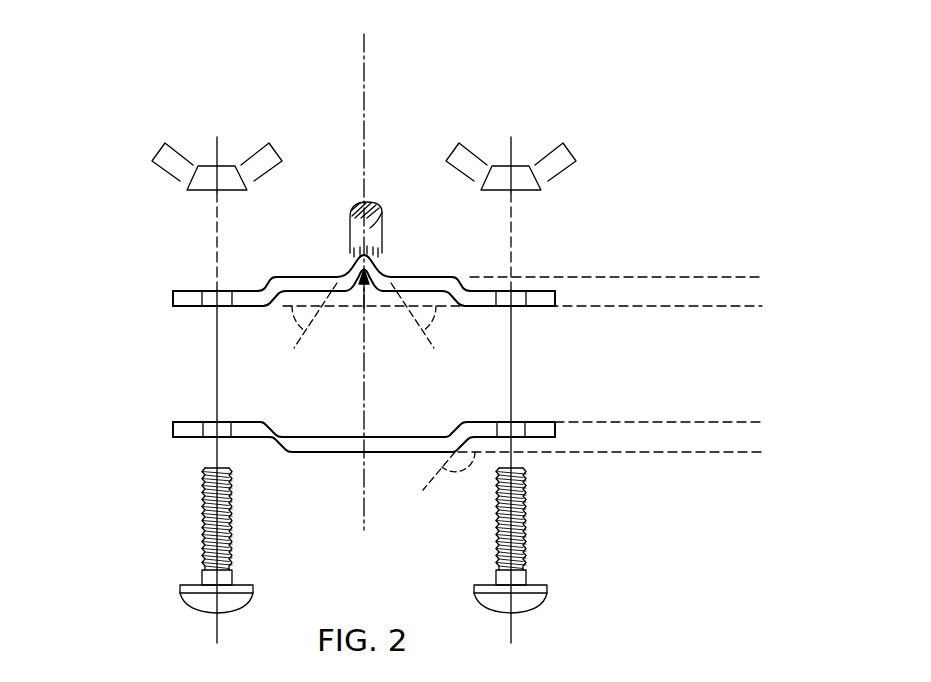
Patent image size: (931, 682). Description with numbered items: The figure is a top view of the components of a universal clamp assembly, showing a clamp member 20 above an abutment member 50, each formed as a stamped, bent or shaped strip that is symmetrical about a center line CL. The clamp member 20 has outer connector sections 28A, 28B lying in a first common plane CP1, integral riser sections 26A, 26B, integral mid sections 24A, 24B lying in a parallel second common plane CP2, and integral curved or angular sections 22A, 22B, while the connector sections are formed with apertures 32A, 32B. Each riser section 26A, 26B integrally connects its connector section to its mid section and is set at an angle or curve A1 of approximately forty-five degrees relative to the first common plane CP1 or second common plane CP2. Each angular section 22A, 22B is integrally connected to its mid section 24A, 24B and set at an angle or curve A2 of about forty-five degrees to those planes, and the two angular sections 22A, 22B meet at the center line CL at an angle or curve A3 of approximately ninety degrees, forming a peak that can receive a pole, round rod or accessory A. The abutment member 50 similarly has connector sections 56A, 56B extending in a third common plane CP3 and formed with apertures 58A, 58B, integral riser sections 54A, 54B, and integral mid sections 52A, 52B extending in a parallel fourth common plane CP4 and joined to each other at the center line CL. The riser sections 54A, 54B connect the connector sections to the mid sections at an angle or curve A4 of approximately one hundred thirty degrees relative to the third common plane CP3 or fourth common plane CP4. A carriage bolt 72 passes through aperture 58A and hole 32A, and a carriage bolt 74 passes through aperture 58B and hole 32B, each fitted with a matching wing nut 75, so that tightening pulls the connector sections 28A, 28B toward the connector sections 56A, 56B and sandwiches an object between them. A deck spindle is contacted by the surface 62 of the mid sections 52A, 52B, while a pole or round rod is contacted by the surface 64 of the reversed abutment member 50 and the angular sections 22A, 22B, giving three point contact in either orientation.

The clamp member 20 is at (673, 265).
The angular section 22A is at (347, 267).
The angular section 22B is at (391, 273).
The mid section 24A is at (303, 282).
The mid section 24B is at (437, 278).
The riser section 26A is at (267, 288).
The riser section 26B is at (462, 288).
The connector section 28A is at (183, 298).
The connector section 28B is at (546, 298).
The aperture 32A is at (212, 300).
The aperture 32B is at (518, 300).
The wing nut 75 is at (172, 157).
The accessory A is at (388, 203).
The angle or curve A1 is at (432, 321).
The angle or curve A2 is at (296, 321).
The angle or curve A3 is at (363, 300).
The angle or curve A4 is at (468, 467).
The center line CL is at (360, 270).
The first common plane CP1 is at (545, 306).
The second common plane CP2 is at (639, 277).
The third common plane CP3 is at (681, 422).
The fourth common plane CP4 is at (633, 451).
The abutment member 50 is at (667, 421).
The mid section 52A is at (332, 444).
The mid section 52B is at (408, 442).
The riser section 54A is at (261, 440).
The riser section 54B is at (456, 432).
The connector section 56A is at (187, 432).
The connector section 56B is at (541, 432).
The aperture 58A is at (215, 438).
The aperture 58B is at (513, 438).
The surface 62 is at (300, 436).
The surface 64 is at (268, 438).
The carriage bolt 72 is at (225, 602).
The carriage bolt 74 is at (507, 602).